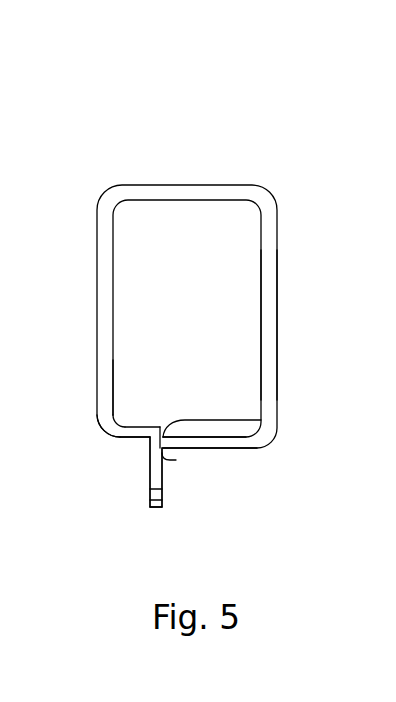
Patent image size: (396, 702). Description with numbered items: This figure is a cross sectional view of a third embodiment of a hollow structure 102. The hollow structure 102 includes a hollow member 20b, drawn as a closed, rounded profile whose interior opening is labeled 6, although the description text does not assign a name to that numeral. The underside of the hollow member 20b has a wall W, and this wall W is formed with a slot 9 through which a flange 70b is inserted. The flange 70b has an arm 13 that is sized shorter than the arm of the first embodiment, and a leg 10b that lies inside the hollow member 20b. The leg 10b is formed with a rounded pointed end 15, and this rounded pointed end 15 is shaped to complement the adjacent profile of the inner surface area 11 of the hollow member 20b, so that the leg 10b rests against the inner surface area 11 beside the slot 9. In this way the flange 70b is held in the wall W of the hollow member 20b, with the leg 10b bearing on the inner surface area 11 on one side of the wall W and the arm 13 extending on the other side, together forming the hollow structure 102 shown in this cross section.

The hollow structure 102 is at (78, 82).
The opening 6 is at (190, 307).
The hollow member 20b is at (268, 358).
The inner surface area 11 is at (121, 395).
The slot 9 is at (240, 419).
The rounded pointed end 15 is at (125, 432).
The leg 10b is at (135, 431).
The flange 70b is at (165, 483).
The arm 13 is at (178, 453).
The wall W is at (210, 443).